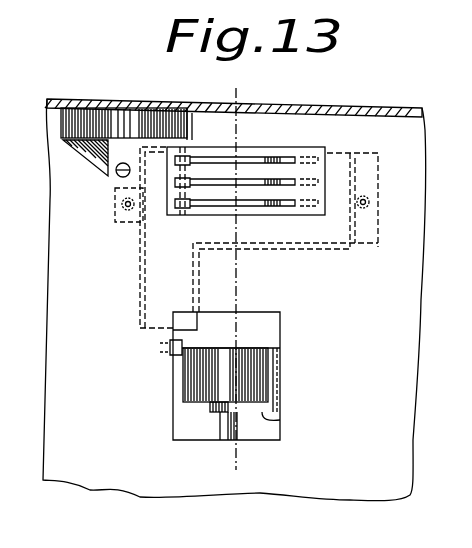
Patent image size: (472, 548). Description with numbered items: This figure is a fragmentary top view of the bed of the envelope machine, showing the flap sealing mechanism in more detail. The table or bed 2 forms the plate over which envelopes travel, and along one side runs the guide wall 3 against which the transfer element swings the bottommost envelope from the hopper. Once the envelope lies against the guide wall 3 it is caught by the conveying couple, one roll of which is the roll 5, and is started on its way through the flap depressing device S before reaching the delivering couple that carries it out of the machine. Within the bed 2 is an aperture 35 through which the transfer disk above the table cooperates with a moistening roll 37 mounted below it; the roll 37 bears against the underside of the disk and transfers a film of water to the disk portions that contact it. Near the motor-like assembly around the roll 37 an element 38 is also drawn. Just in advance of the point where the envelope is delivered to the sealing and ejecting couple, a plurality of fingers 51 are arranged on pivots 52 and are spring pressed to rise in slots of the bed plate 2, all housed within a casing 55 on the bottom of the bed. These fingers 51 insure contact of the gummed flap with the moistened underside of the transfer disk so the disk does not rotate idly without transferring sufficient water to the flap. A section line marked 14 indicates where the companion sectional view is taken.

The table or bed 2 is at (234, 300).
The guide wall 3 is at (103, 101).
The conveying couple roll 5 is at (143, 122).
The section line 14 is at (258, 89).
The aperture 35 is at (281, 326).
The moistening roll 37 is at (253, 374).
The bearing hook 38 is at (276, 420).
The fingers 51 is at (250, 203).
The pivots 52 is at (259, 225).
The casing 55 is at (352, 154).
The flap depressing device S is at (308, 156).